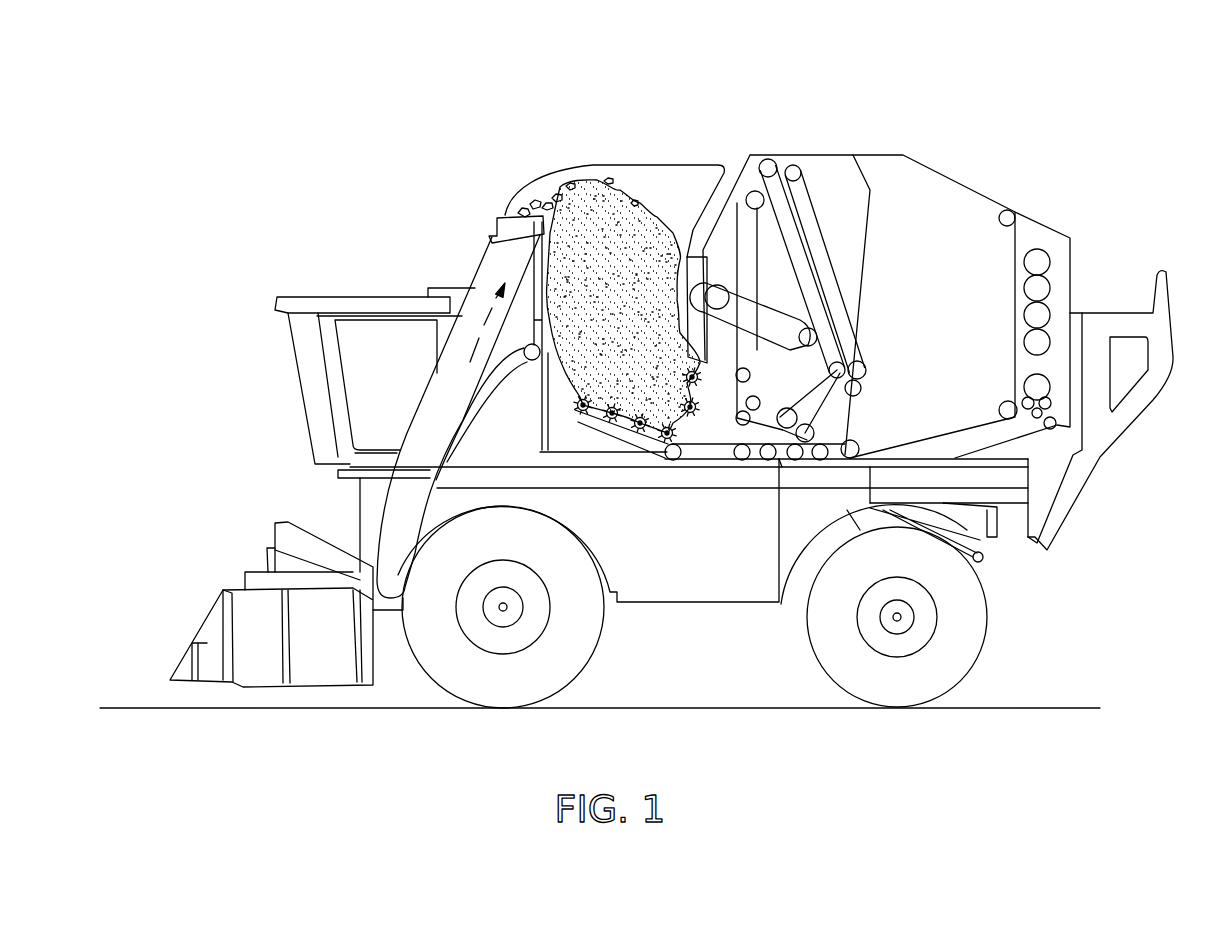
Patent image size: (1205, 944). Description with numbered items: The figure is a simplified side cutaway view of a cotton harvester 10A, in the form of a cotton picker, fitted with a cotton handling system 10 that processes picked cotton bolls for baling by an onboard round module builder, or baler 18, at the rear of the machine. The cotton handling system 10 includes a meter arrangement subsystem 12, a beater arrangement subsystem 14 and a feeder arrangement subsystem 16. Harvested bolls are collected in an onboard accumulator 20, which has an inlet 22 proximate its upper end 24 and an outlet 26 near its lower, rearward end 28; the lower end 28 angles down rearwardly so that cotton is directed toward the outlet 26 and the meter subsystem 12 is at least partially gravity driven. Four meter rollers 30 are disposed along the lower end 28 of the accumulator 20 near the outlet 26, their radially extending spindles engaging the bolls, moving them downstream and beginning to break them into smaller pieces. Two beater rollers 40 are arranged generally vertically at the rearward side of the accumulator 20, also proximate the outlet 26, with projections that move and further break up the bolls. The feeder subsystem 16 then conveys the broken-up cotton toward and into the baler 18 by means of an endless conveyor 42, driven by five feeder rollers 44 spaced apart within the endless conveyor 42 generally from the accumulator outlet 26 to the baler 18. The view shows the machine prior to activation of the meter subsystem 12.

The cotton harvester 10A is at (699, 155).
The cotton handling system 10 is at (592, 428).
The meter arrangement subsystem 12 is at (605, 443).
The beater arrangement subsystem 14 is at (712, 388).
The feeder arrangement subsystem 16 is at (730, 462).
The baler 18 is at (913, 203).
The accumulator 20 is at (645, 205).
The inlet 22 is at (505, 217).
The upper end 24 is at (593, 165).
The outlet 26 is at (682, 410).
The lower end 28 is at (600, 392).
The meter rollers 30 is at (575, 412).
The beater rollers 40 is at (703, 405).
The endless conveyor 42 is at (782, 460).
The feeder rollers 44 is at (793, 467).